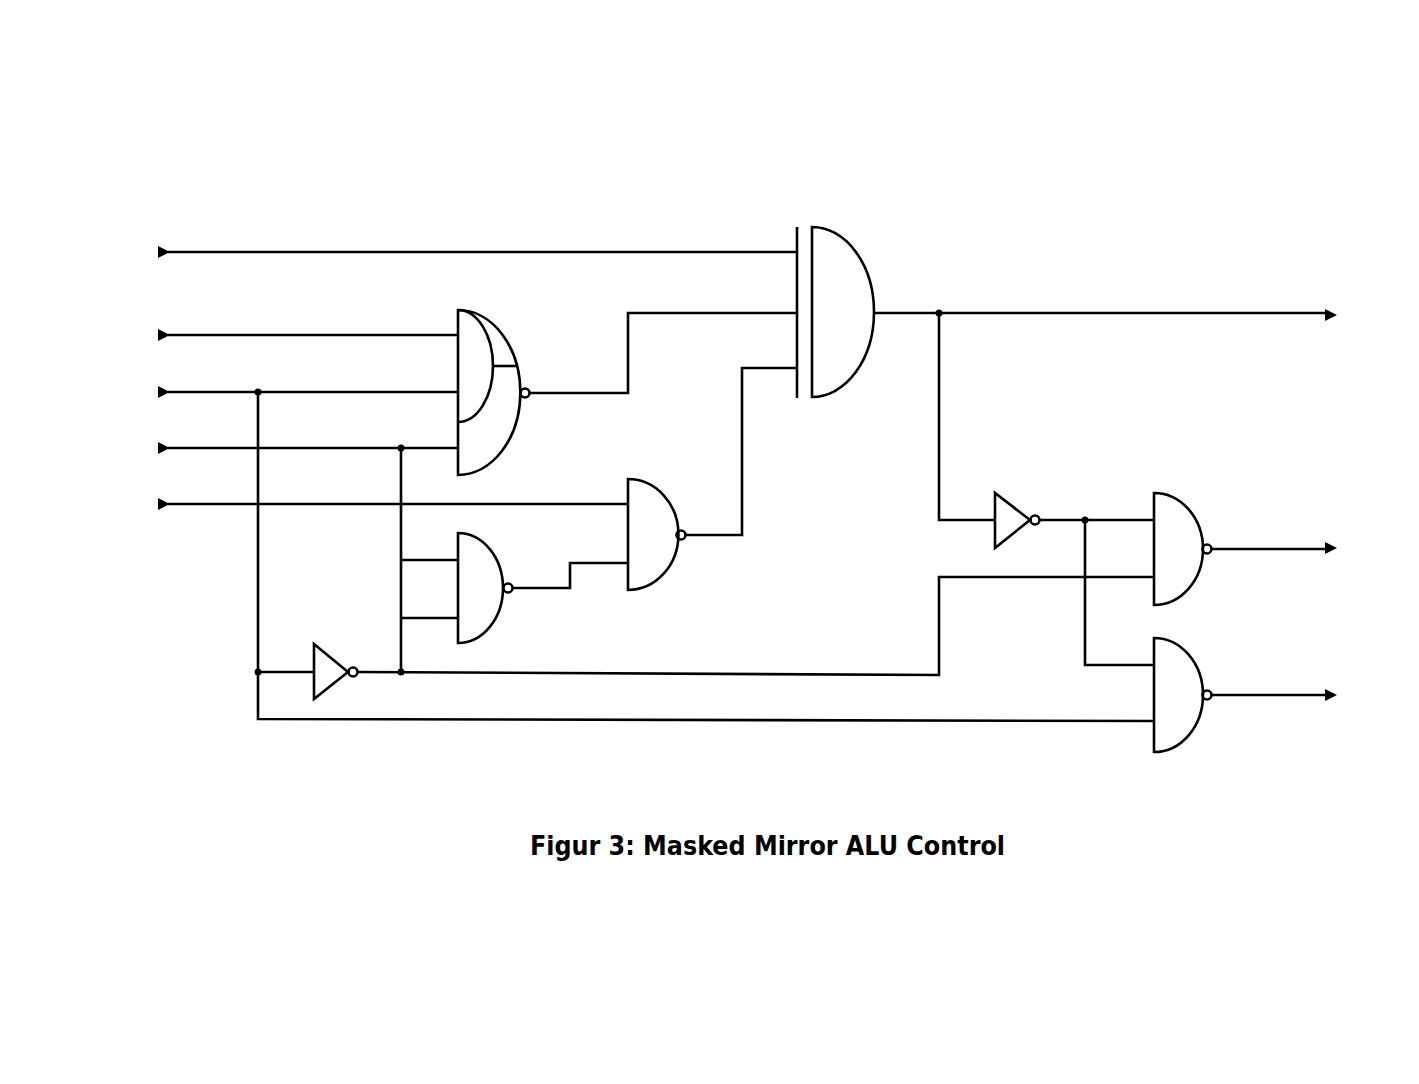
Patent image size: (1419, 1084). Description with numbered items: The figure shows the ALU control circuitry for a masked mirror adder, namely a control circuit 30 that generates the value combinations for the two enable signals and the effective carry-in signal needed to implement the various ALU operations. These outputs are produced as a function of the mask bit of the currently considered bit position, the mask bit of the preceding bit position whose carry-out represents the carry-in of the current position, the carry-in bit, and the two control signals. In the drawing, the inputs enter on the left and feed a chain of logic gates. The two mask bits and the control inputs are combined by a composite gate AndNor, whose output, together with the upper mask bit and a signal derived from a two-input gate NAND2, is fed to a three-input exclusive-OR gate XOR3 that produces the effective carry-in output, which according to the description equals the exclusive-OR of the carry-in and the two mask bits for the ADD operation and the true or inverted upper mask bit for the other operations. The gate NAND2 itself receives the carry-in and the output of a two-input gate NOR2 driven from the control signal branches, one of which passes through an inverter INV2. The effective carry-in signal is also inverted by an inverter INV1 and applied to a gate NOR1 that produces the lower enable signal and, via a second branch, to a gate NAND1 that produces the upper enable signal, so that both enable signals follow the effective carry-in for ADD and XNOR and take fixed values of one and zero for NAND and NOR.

The control circuit 30 is at (370, 182).
The AND-NOR gate AndNor is at (489, 379).
The three-input XOR gate XOR3 is at (835, 293).
The two-input NAND gate NAND2 is at (681, 537).
The two-input NOR gate NOR2 is at (505, 591).
The inverter INV1 is at (1017, 508).
The inverter INV2 is at (335, 659).
The two-input NOR gate NOR1 is at (1205, 551).
The two-input NAND gate NAND1 is at (1212, 696).